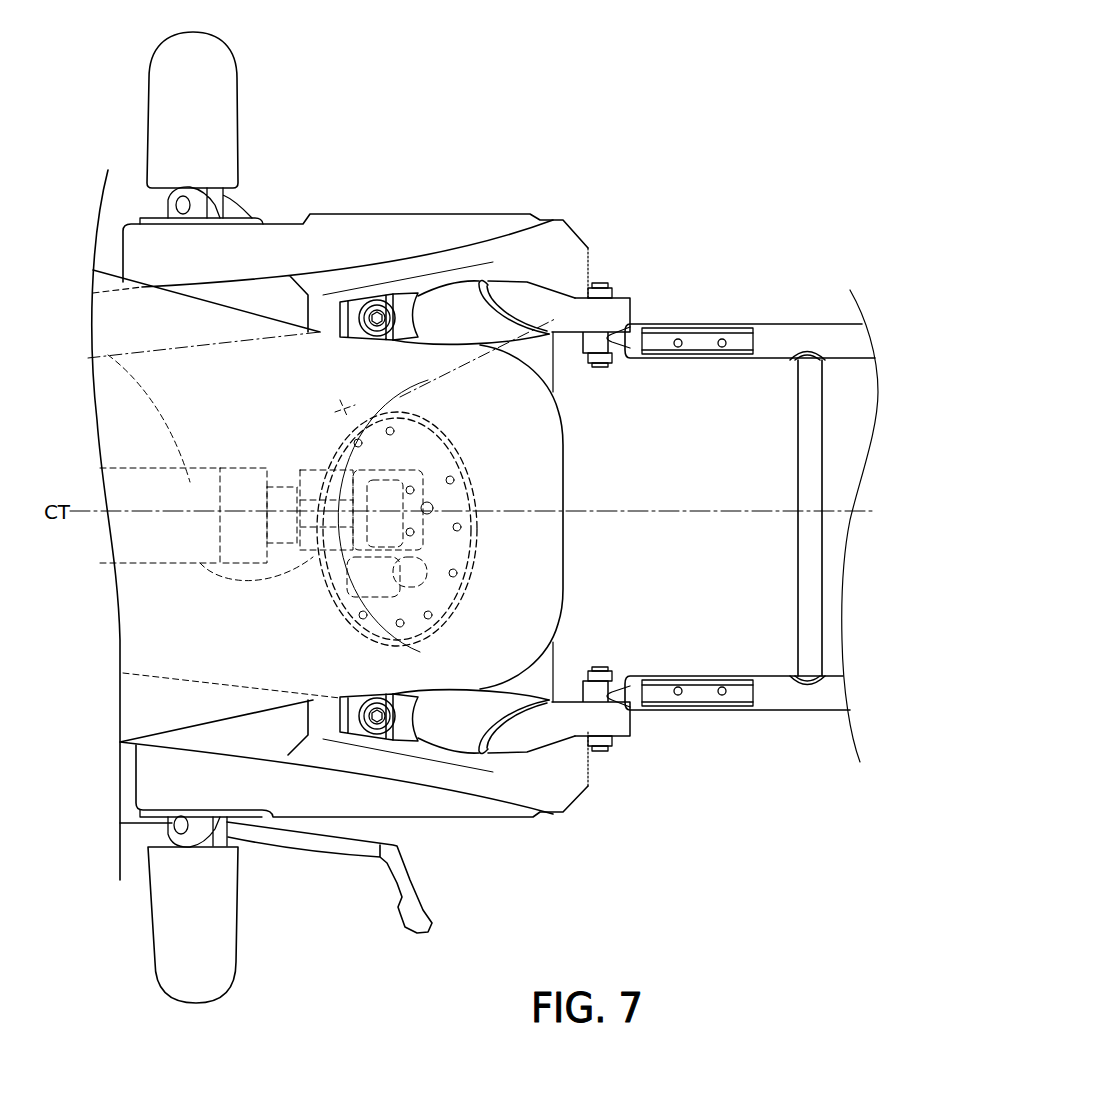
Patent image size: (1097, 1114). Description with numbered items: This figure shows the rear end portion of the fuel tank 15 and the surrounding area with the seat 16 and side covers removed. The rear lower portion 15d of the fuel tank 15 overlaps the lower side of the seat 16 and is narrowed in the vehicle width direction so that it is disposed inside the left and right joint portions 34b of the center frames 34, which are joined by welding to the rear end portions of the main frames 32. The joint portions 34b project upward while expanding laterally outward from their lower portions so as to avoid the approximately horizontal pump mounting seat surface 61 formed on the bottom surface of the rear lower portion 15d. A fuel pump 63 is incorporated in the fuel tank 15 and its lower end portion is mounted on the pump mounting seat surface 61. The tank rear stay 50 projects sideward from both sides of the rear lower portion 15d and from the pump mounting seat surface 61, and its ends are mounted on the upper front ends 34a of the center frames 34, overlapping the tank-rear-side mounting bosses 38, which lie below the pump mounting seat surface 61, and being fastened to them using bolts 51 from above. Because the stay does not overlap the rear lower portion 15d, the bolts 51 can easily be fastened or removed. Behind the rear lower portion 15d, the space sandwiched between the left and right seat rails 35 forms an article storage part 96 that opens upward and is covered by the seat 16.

The fuel tank 15 is at (153, 580).
The rear lower portion 15d is at (553, 550).
The seat 16 is at (400, 637).
The main frame 32 is at (267, 293).
The center frame 34 is at (599, 254).
The upper front end 34a is at (440, 292).
The joint portion 34b is at (463, 290).
The seat rail 35 is at (777, 324).
The tank-rear-side mounting boss 38 is at (343, 303).
The tank rear stay 50 is at (375, 300).
The bolt 51 is at (407, 293).
The pump mounting seat surface 61 is at (520, 472).
The fuel pump 63 is at (105, 352).
The article storage part 96 is at (708, 471).